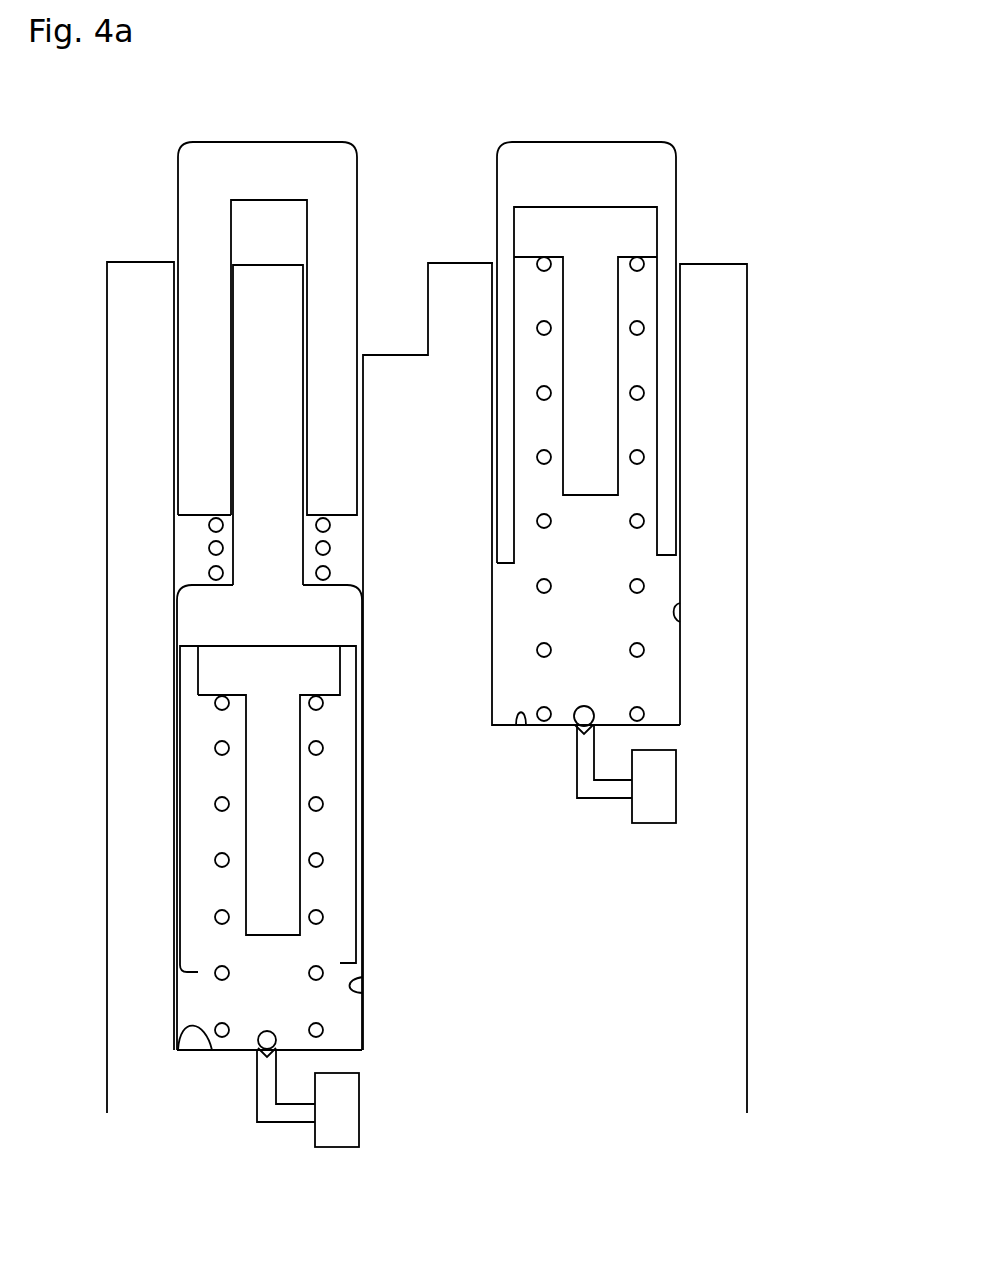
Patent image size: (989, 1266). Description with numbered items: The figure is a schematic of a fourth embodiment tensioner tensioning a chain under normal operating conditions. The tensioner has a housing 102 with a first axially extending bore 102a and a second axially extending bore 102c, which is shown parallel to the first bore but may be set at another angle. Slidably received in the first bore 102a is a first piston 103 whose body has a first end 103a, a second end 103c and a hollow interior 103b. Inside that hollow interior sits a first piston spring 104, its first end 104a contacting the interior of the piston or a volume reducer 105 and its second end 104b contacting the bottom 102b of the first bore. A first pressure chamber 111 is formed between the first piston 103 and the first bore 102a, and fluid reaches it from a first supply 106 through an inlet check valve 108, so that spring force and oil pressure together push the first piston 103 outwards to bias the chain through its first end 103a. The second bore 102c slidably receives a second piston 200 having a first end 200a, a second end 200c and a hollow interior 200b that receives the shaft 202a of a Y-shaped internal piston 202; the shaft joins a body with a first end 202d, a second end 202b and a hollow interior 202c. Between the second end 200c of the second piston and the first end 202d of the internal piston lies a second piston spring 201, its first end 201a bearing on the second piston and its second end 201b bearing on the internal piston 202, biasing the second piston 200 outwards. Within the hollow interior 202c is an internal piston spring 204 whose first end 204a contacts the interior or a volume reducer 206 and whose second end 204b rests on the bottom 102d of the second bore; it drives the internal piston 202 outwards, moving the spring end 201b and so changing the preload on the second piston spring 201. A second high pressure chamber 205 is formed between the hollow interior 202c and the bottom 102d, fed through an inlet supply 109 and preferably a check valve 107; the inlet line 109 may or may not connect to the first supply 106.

The housing 102 is at (750, 905).
The first axially extending bore 102a is at (680, 612).
The bottom of the first axially extending bore 102b is at (518, 718).
The second axially extending bore 102c is at (363, 990).
The bottom of the second axially extending bore 102d is at (181, 1050).
The first piston 103 is at (608, 187).
The first end of the first piston 103a is at (578, 141).
The hollow interior of the first piston 103b is at (620, 207).
The second end of the first piston 103c is at (672, 557).
The first piston spring 104 is at (645, 390).
The first end of the first piston spring 104a is at (645, 266).
The second end of the first piston spring 104b is at (648, 717).
The volume reducer 105 is at (615, 252).
The first supply 106 is at (608, 800).
The check valve 107 is at (257, 1046).
The inlet check valve 108 is at (594, 716).
The inlet supply 109 is at (287, 1118).
The first pressure chamber 111 is at (605, 574).
The second piston 200 is at (290, 183).
The first end of the second piston 200a is at (272, 141).
The hollow interior of the second piston 200b is at (273, 200).
The second end of the second piston 200c is at (178, 518).
The second piston spring 201 is at (208, 548).
The first end of the second piston spring 201a is at (328, 526).
The second end of the second piston spring 201b is at (208, 573).
The Y-shaped internal piston 202 is at (290, 627).
The shaft of the internal piston 202a is at (243, 295).
The second end of the internal piston body 202b is at (190, 972).
The hollow interior of the internal piston 202c is at (253, 647).
The first end of the internal piston body 202d is at (341, 586).
The internal piston spring 204 is at (322, 918).
The first end of the internal piston spring 204a is at (322, 708).
The second end of the internal piston spring 204b is at (323, 1032).
The second high pressure chamber 205 is at (290, 1014).
The volume reducer 206 is at (305, 684).